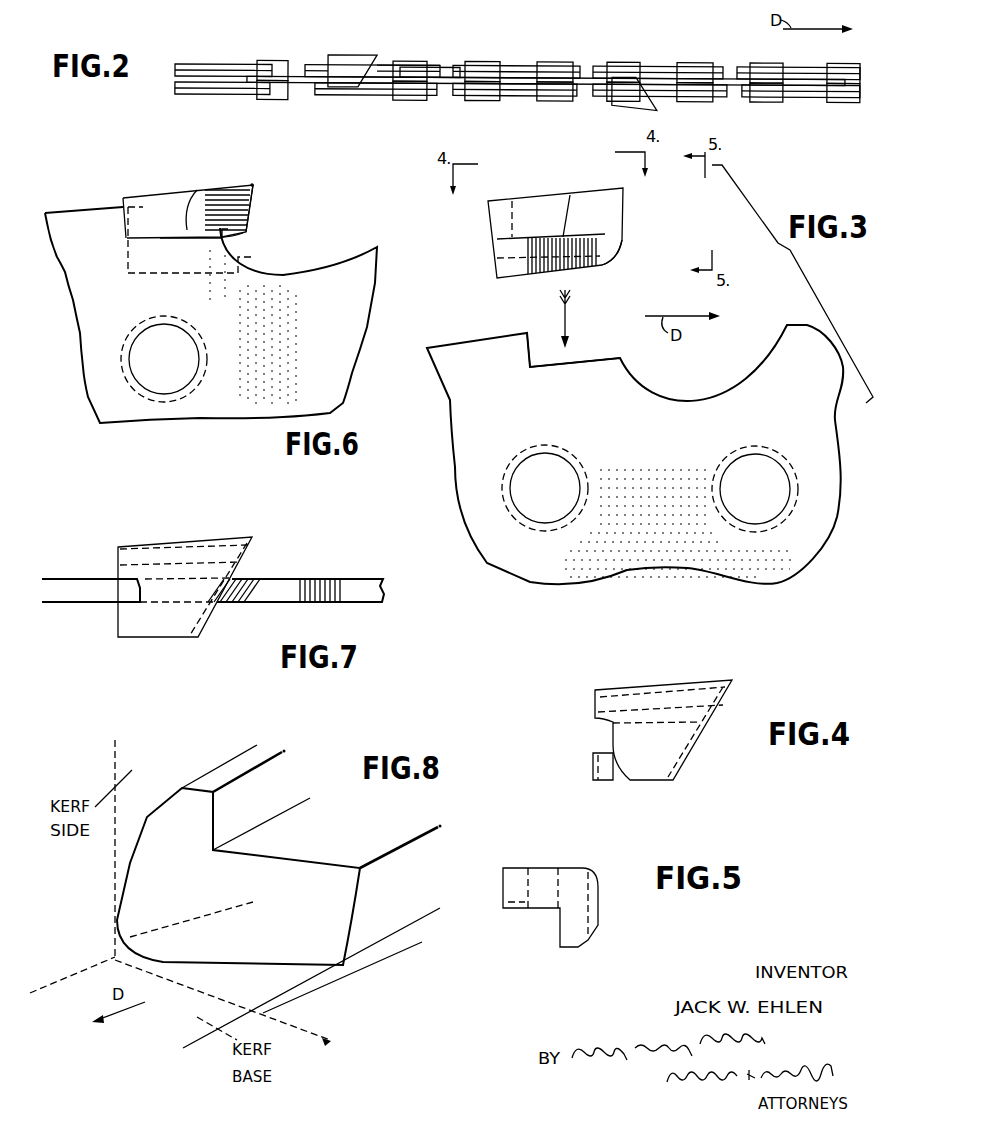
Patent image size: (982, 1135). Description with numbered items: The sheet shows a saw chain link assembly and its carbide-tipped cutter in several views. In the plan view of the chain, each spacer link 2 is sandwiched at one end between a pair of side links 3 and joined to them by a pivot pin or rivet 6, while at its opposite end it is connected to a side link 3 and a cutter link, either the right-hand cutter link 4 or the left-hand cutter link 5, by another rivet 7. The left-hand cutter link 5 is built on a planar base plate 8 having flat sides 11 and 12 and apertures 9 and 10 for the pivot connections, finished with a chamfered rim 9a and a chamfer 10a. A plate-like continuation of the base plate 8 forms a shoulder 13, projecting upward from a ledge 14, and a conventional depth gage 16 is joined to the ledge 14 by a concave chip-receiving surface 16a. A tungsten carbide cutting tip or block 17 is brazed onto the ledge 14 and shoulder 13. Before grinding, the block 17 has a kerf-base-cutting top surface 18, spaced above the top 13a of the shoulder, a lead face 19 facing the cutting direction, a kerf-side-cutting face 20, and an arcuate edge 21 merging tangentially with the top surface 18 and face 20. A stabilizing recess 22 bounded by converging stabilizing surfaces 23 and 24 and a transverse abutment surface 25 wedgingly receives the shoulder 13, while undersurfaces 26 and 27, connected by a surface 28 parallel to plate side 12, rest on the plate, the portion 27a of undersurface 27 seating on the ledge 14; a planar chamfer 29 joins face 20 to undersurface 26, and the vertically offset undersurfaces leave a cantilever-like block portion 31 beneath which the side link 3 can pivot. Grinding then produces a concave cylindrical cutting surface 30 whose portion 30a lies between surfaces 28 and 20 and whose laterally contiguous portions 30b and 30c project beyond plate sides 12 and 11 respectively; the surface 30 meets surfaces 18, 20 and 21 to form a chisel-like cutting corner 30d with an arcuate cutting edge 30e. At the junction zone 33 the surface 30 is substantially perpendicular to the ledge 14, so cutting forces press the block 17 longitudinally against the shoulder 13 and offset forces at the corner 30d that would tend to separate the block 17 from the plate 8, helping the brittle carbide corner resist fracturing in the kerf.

In FIG. 2, the spacer link 2 is at (447, 76).
In FIG. 2, the side link 3 is at (530, 63).
In FIG. 2, the right-hand cutter link 4 is at (612, 96).
In FIG. 2, the left-hand cutter link 5 is at (332, 51).
In FIG. 2, the pivot pin or rivet 6 is at (493, 62).
In FIG. 2, the pivot pin or rivet 7 is at (410, 64).
In FIG. 2, the planar base plate 8 is at (390, 64).
In FIG. 6, the planar base plate 8 is at (358, 300).
In FIG. 3, the planar base plate 8 is at (671, 469).
In FIG. 7, the planar base plate 8 is at (273, 604).
In FIG. 6, the aperture 9 is at (145, 362).
In FIG. 3, the aperture 9 is at (533, 518).
In FIG. 6, the chamfered rim 9a is at (187, 400).
In FIG. 3, the chamfered rim 9a is at (526, 528).
In FIG. 3, the aperture 10 is at (778, 500).
In FIG. 3, the chamfer 10a is at (780, 523).
In FIG. 7, the planar flat side 11 is at (248, 604).
In FIG. 7, the planar flat side 12 is at (285, 578).
In FIG. 6, the shoulder 13 is at (128, 242).
In FIG. 3, the shoulder 13 is at (527, 333).
In FIG. 7, the shoulder 13 is at (135, 597).
In FIG. 3, the top of the shoulder 13a is at (507, 340).
In FIG. 6, the ledge 14 is at (158, 270).
In FIG. 3, the ledge 14 is at (575, 362).
In FIG. 3, the depth gage 16 is at (810, 363).
In FIG. 3, the concave surface 16a is at (675, 400).
In FIG. 2, the cutting tip or block 17 is at (338, 53).
In FIG. 6, the cutting tip or block 17 is at (206, 203).
In FIG. 3, the cutting tip or block 17 is at (550, 229).
In FIG. 7, the cutting tip or block 17 is at (180, 584).
In FIG. 4, the cutting tip or block 17 is at (662, 727).
In FIG. 5, the cutting tip or block 17 is at (556, 911).
In FIG. 8, the cutting tip or block 17 is at (252, 870).
In FIG. 3, the top surface 18 is at (540, 200).
In FIG. 7, the top surface 18 is at (194, 599).
In FIG. 4, the top surface 18 is at (664, 747).
In FIG. 5, the top surface 18 is at (516, 867).
In FIG. 8, the top surface 18 is at (265, 963).
In FIG. 3, the lead face 19 is at (612, 205).
In FIG. 3, the kerf-side-cutting face 20 is at (620, 226).
In FIG. 4, the kerf-side-cutting face 20 is at (606, 695).
In FIG. 5, the kerf-side-cutting face 20 is at (600, 898).
In FIG. 8, the kerf-side-cutting face 20 is at (133, 858).
In FIG. 7, the arcuate edge 21 is at (175, 540).
In FIG. 4, the arcuate edge 21 is at (660, 681).
In FIG. 5, the arcuate edge 21 is at (597, 869).
In FIG. 3, the stabilizing recess 22 is at (500, 220).
In FIG. 4, the stabilizing recess 22 is at (608, 738).
In FIG. 5, the stabilizing recess 22 is at (545, 878).
In FIG. 7, the stabilizing surface 23 is at (132, 578).
In FIG. 4, the stabilizing surface 23 is at (598, 718).
In FIG. 7, the stabilizing surface 24 is at (127, 610).
In FIG. 4, the stabilizing surface 24 is at (593, 758).
In FIG. 7, the abutment surface 25 is at (145, 580).
In FIG. 4, the abutment surface 25 is at (630, 782).
In FIG. 5, the undersurface 26 is at (566, 949).
In FIG. 8, the undersurface 26 is at (230, 768).
In FIG. 5, the undersurface 27 is at (512, 910).
In FIG. 8, the undersurface 27 is at (336, 845).
In FIG. 5, the mounting surface portion 27a is at (540, 912).
In FIG. 3, the plate-side-engaging surface 28 is at (543, 270).
In FIG. 5, the plate-side-engaging surface 28 is at (559, 930).
In FIG. 8, the plate-side-engaging surface 28 is at (261, 806).
In FIG. 5, the chamfer 29 is at (583, 945).
In FIG. 6, the concave carbide cutting surface 30 is at (228, 218).
In FIG. 4, the concave carbide cutting surface 30 is at (712, 720).
In FIG. 5, the concave carbide cutting surface 30 is at (584, 899).
In FIG. 6, the concave surface portion 30a is at (243, 236).
In FIG. 6, the cutting surface portion 30b is at (250, 206).
In FIG. 6, the cutting surface portion 30c is at (195, 190).
In FIG. 6, the chisel-like cutting corner 30d is at (251, 183).
In FIG. 8, the chisel-like cutting corner 30d is at (135, 930).
In FIG. 7, the arcuate cutting edge 30e is at (252, 538).
In FIG. 4, the arcuate cutting edge 30e is at (732, 680).
In FIG. 8, the arcuate cutting edge 30e is at (117, 940).
In FIG. 5, the cantilever-like block portion 31 is at (516, 890).
In FIG. 6, the junction zone 33 is at (215, 236).